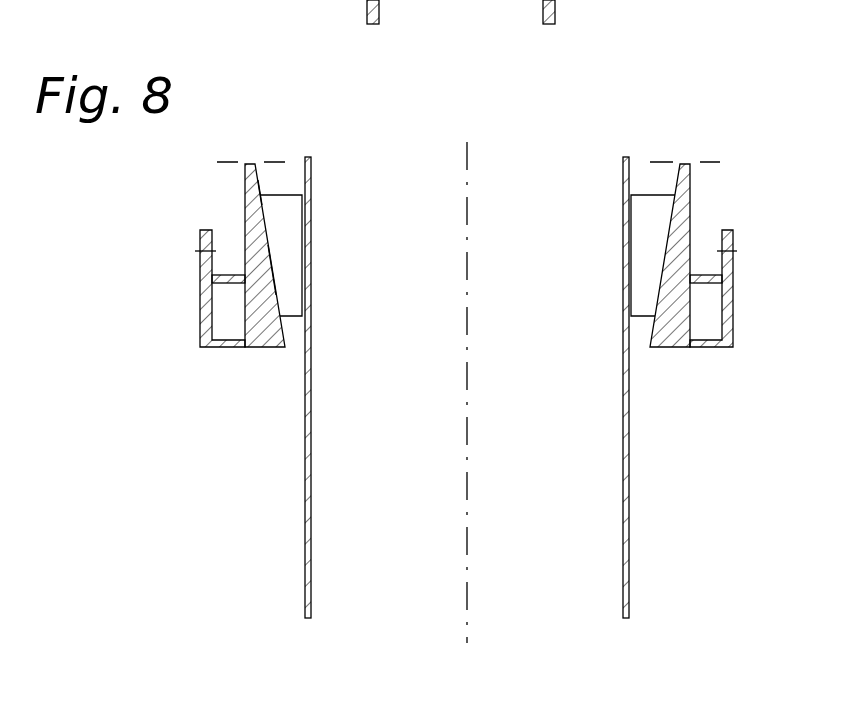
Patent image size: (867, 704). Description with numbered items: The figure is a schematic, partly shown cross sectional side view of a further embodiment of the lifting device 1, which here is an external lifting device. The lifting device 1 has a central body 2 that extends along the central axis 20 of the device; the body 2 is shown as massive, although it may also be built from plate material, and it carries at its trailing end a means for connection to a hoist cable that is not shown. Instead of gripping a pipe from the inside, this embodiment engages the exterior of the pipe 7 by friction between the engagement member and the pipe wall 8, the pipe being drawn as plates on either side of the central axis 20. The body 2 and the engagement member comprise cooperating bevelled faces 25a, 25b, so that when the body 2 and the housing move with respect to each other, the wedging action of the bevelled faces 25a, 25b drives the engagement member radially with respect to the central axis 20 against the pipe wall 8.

The lifting device 1 is at (704, 312).
The central body 2 is at (690, 210).
The pipe 7 is at (634, 578).
The pipe wall 8 is at (310, 522).
The central axis 20 is at (467, 560).
The bevelled face 25a is at (265, 223).
The bevelled face 25b is at (275, 262).